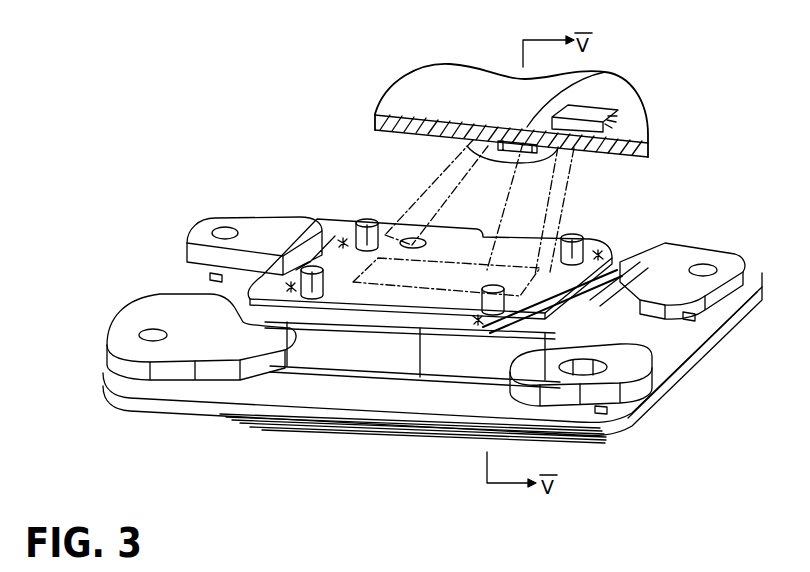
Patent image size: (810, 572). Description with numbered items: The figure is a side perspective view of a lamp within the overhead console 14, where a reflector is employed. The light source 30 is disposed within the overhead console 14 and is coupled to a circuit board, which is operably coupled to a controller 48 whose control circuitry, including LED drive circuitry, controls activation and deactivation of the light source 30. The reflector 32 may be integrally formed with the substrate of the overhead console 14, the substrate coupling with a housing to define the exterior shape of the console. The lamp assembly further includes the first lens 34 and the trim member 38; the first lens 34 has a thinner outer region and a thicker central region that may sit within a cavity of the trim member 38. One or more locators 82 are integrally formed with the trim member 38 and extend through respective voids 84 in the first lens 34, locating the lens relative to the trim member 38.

The overhead console 14 is at (226, 177).
The light source 30 is at (597, 76).
The controller 48 is at (622, 111).
The reflector 32 is at (545, 196).
The voids 84 is at (345, 245).
The locators 82 is at (367, 230).
The first lens 34 is at (627, 330).
The trim member 38 is at (582, 320).